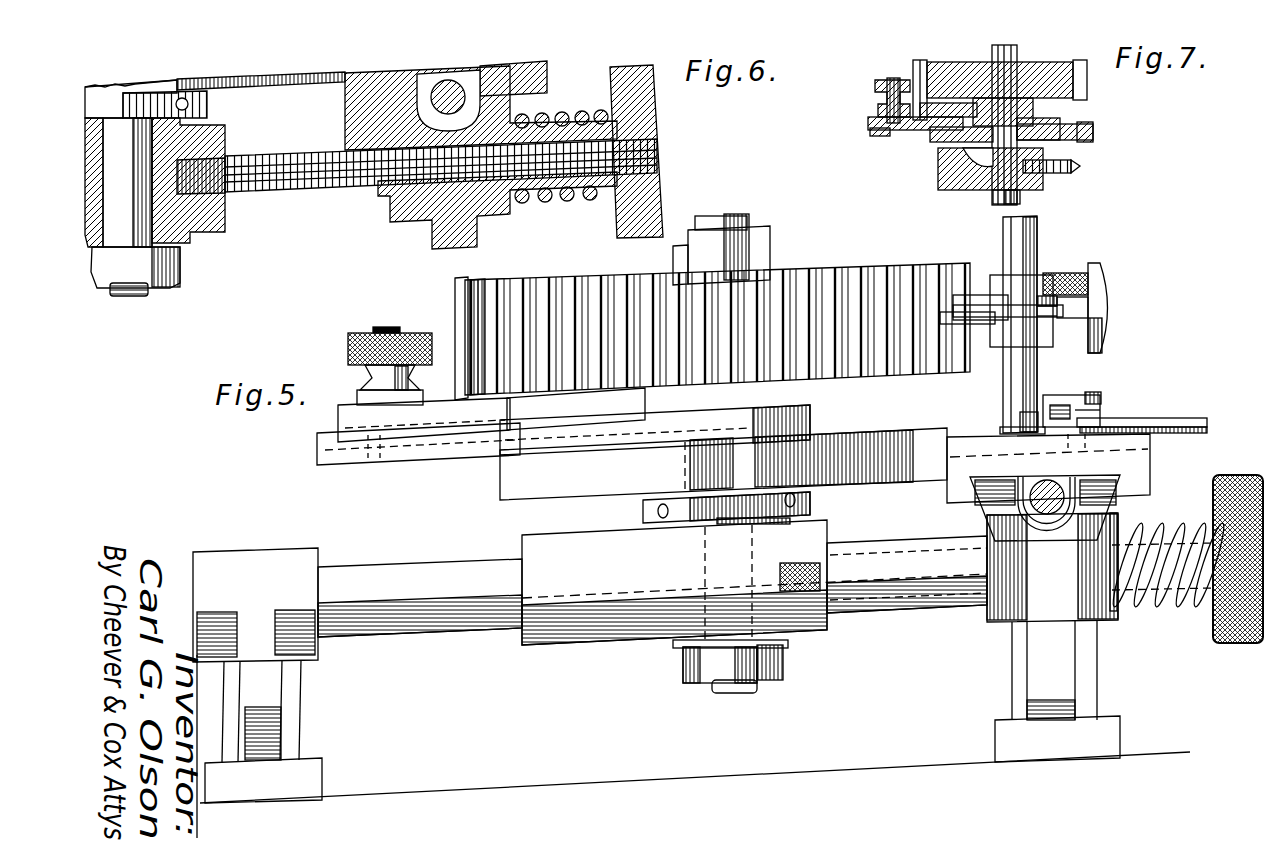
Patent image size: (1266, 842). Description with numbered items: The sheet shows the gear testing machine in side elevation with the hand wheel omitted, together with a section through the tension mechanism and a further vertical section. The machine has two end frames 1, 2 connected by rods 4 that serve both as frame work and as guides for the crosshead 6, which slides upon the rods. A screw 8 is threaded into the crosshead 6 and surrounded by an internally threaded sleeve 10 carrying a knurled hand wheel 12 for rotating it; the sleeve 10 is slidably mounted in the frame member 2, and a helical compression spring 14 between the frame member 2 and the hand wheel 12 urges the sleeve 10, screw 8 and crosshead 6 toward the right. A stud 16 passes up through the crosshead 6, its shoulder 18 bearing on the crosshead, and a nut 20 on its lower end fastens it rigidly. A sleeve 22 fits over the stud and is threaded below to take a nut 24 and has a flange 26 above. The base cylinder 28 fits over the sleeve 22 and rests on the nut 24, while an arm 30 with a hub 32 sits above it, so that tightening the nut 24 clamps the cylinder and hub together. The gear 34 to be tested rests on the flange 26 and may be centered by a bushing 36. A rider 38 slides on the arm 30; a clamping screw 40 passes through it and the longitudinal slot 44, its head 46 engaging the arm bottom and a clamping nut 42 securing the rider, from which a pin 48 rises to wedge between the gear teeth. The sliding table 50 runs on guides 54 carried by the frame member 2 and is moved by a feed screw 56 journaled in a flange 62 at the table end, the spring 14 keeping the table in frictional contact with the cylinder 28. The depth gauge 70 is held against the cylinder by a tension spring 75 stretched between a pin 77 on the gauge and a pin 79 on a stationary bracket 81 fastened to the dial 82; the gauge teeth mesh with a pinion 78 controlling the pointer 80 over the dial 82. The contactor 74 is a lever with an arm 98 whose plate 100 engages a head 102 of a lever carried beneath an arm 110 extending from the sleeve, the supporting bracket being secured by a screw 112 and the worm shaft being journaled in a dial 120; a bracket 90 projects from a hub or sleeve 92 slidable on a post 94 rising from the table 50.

In FIG. 5, the end frame 1 is at (288, 692).
In FIG. 6, the end frame 2 is at (490, 208).
In FIG. 5, the end frame 2 is at (1023, 661).
In FIG. 5, the rods 4 is at (403, 578).
In FIG. 6, the crosshead 6 is at (205, 225).
In FIG. 7, the crosshead 6 is at (1044, 186).
In FIG. 5, the crosshead 6 is at (608, 630).
In FIG. 6, the screw 8 is at (343, 190).
In FIG. 7, the screw 8 is at (1081, 168).
In FIG. 5, the screw 8 is at (860, 618).
In FIG. 6, the internally threaded sleeve 10 is at (378, 206).
In FIG. 5, the internally threaded sleeve 10 is at (1163, 603).
In FIG. 6, the knurled hand wheel 12 is at (660, 190).
In FIG. 5, the knurled hand wheel 12 is at (1223, 642).
In FIG. 6, the helical compression spring 14 is at (564, 203).
In FIG. 5, the helical compression spring 14 is at (1162, 518).
In FIG. 6, the stud 16 is at (155, 274).
In FIG. 7, the stud 16 is at (997, 60).
In FIG. 5, the stud 16 is at (748, 228).
In FIG. 7, the shoulder 18 is at (940, 172).
In FIG. 6, the nut 20 is at (133, 272).
In FIG. 7, the nut 20 is at (993, 198).
In FIG. 7, the sleeve 22 is at (1060, 136).
In FIG. 5, the sleeve 22 is at (682, 471).
In FIG. 6, the nut 24 is at (208, 104).
In FIG. 7, the nut 24 is at (1062, 141).
In FIG. 5, the nut 24 is at (812, 500).
In FIG. 7, the flange 26 is at (1035, 110).
In FIG. 5, the flange 26 is at (802, 390).
In FIG. 6, the base cylinder 28 is at (310, 86).
In FIG. 7, the base cylinder 28 is at (940, 120).
In FIG. 5, the base cylinder 28 is at (505, 492).
In FIG. 7, the arm 30 is at (916, 141).
In FIG. 5, the arm 30 is at (463, 458).
In FIG. 7, the hub 32 is at (1093, 130).
In FIG. 5, the hub 32 is at (813, 431).
In FIG. 7, the gear 34 is at (1045, 75).
In FIG. 5, the gear 34 is at (808, 275).
In FIG. 7, the bushing 36 is at (990, 62).
In FIG. 5, the bushing 36 is at (766, 242).
In FIG. 7, the rider 38 is at (868, 122).
In FIG. 5, the rider 38 is at (338, 418).
In FIG. 7, the clamping screw 40 is at (893, 80).
In FIG. 5, the clamping screw 40 is at (385, 330).
In FIG. 7, the clamping nut 42 is at (875, 88).
In FIG. 5, the clamping nut 42 is at (348, 341).
In FIG. 5, the longitudinal slot 44 is at (515, 428).
In FIG. 7, the head 46 is at (880, 134).
In FIG. 5, the head 46 is at (370, 462).
In FIG. 7, the pin 48 is at (918, 62).
In FIG. 5, the pin 48 is at (485, 279).
In FIG. 6, the sliding table 50 is at (353, 104).
In FIG. 7, the sliding table 50 is at (1093, 129).
In FIG. 5, the sliding table 50 is at (1150, 449).
In FIG. 6, the guides 54 is at (507, 103).
In FIG. 5, the guides 54 is at (990, 509).
In FIG. 6, the feed screw 56 is at (520, 80).
In FIG. 5, the feed screw 56 is at (1053, 505).
In FIG. 5, the flange 62 is at (1022, 514).
In FIG. 5, the depth gauge 70 is at (945, 482).
In FIG. 5, the contactor 74 is at (942, 312).
In FIG. 5, the tension spring 75 is at (1067, 403).
In FIG. 5, the pin 77 is at (1020, 408).
In FIG. 5, the pinion 78 is at (1098, 443).
In FIG. 5, the pin 79 is at (1100, 406).
In FIG. 5, the pointer 80 is at (1158, 417).
In FIG. 5, the stationary bracket 81 is at (1095, 396).
In FIG. 5, the dial 82 is at (1204, 424).
In FIG. 5, the bracket 90 is at (1000, 292).
In FIG. 5, the hub or sleeve 92 is at (1021, 311).
In FIG. 5, the post 94 is at (1030, 370).
In FIG. 5, the arm 98 is at (1010, 320).
In FIG. 5, the plate 100 is at (1105, 316).
In FIG. 5, the head 102 is at (1110, 305).
In FIG. 5, the arm 110 is at (1041, 288).
In FIG. 5, the screw 112 is at (1078, 273).
In FIG. 5, the dial 120 is at (1105, 285).